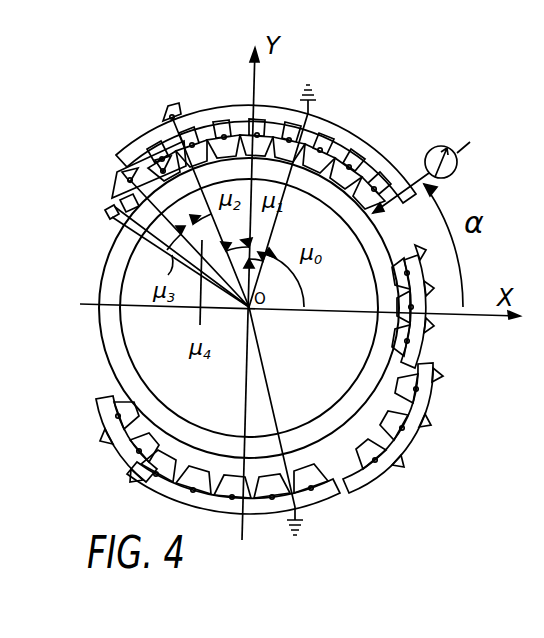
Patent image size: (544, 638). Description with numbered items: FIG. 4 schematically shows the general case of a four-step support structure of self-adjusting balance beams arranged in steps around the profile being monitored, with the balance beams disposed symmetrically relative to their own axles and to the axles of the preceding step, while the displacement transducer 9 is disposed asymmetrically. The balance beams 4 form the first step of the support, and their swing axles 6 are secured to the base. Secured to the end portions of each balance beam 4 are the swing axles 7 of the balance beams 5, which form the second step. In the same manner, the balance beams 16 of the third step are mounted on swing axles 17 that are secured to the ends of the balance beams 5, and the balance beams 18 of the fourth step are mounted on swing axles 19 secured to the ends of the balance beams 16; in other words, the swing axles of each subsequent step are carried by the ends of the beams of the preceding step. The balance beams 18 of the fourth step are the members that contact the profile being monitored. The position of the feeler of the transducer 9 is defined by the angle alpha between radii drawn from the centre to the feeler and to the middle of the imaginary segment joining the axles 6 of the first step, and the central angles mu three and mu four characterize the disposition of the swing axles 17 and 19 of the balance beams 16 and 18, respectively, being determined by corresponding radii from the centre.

The balance beam 4 is at (220, 104).
The balance beam 5 is at (150, 142).
The swing axle 6 is at (316, 106).
The swing axle 7 is at (178, 113).
The displacement transducer 9 is at (432, 146).
The balance beam 16 is at (118, 203).
The swing axle 17 is at (129, 171).
The balance beam 18 is at (110, 222).
The swing axle 19 is at (110, 211).